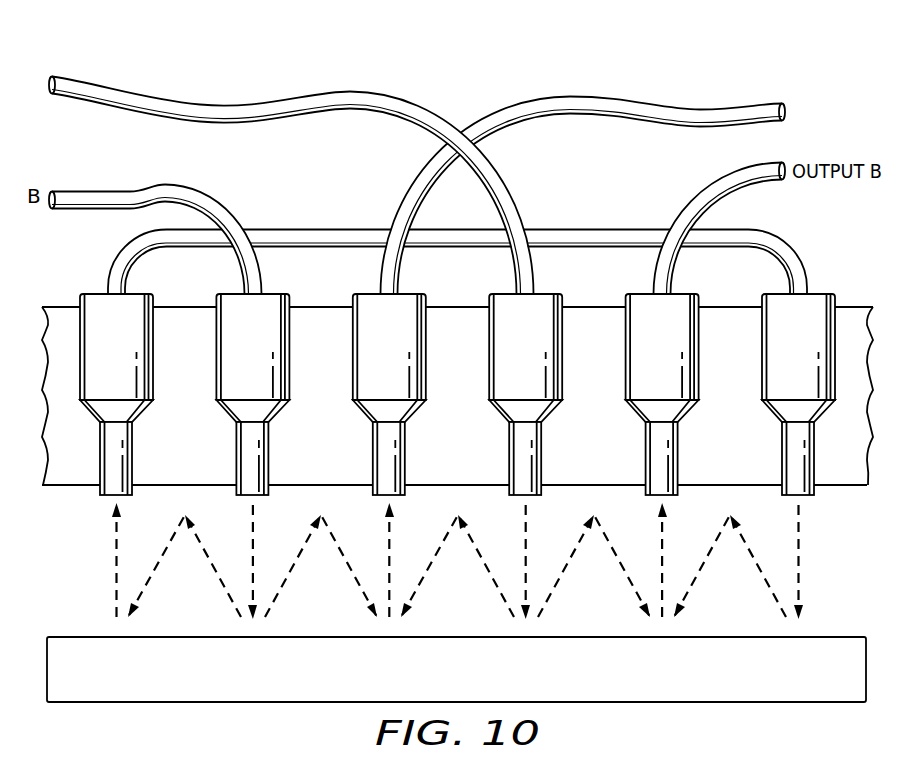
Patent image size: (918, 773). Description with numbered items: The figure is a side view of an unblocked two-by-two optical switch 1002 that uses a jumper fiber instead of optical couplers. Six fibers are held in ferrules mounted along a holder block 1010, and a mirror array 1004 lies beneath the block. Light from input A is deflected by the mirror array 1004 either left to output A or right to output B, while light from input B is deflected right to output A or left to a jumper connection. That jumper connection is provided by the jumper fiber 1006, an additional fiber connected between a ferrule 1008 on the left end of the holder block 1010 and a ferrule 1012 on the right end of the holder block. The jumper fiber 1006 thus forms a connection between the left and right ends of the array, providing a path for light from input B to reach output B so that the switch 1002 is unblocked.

The unblocked 2×2 switch 1002 is at (684, 80).
The mirror array 1004 is at (831, 637).
The jumper fiber 1006 is at (783, 241).
The ferrule 1008 is at (93, 293).
The holder block 1010 is at (73, 486).
The ferrule 1012 is at (819, 295).